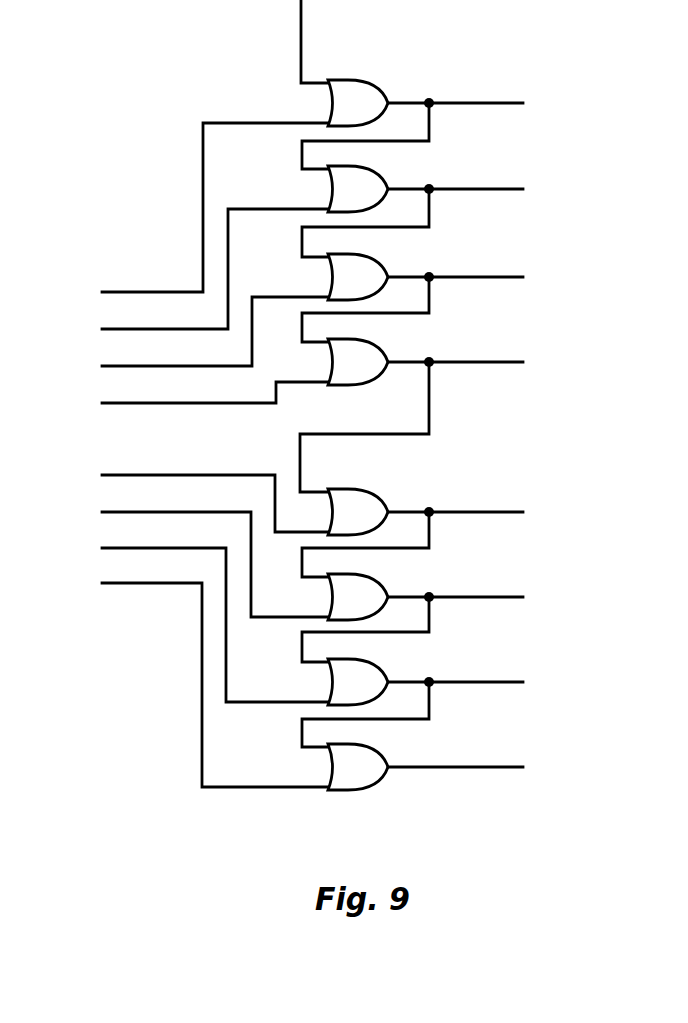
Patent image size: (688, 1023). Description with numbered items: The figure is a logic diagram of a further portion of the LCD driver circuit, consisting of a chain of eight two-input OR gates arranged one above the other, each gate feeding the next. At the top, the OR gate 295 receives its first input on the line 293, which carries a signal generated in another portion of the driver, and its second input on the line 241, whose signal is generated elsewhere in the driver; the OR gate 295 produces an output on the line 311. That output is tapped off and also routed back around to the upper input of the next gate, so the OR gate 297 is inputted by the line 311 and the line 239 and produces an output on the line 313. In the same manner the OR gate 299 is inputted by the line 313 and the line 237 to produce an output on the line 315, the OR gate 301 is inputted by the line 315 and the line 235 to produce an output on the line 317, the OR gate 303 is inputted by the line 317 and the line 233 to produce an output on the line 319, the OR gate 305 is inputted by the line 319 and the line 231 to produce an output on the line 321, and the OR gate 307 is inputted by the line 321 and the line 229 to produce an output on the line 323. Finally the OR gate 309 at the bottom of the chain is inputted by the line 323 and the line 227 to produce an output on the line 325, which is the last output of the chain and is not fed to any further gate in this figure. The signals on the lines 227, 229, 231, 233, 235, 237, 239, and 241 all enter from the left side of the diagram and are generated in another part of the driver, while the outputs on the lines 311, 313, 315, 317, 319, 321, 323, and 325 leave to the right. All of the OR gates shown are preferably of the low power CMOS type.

The line 227 is at (120, 583).
The line 229 is at (120, 548).
The line 231 is at (120, 512).
The line 233 is at (120, 475).
The line 235 is at (120, 403).
The line 237 is at (120, 366).
The line 239 is at (120, 329).
The line 241 is at (120, 292).
The line 293 is at (305, 17).
The OR gate 295 is at (356, 105).
The OR gate 297 is at (356, 191).
The OR gate 299 is at (356, 279).
The OR gate 301 is at (356, 364).
The OR gate 303 is at (356, 514).
The OR gate 305 is at (356, 599).
The OR gate 307 is at (356, 684).
The OR gate 309 is at (356, 769).
The line 311 is at (501, 103).
The line 313 is at (501, 189).
The line 315 is at (501, 277).
The line 317 is at (501, 362).
The line 319 is at (501, 512).
The line 321 is at (501, 597).
The line 323 is at (501, 682).
The line 325 is at (501, 767).